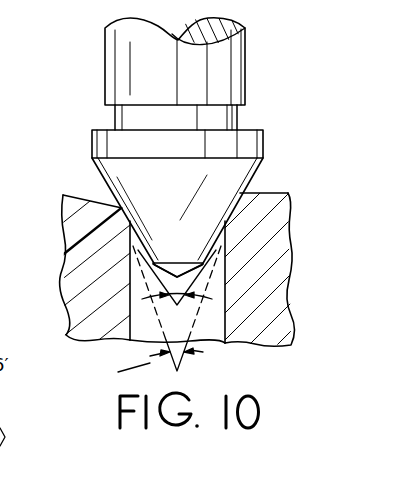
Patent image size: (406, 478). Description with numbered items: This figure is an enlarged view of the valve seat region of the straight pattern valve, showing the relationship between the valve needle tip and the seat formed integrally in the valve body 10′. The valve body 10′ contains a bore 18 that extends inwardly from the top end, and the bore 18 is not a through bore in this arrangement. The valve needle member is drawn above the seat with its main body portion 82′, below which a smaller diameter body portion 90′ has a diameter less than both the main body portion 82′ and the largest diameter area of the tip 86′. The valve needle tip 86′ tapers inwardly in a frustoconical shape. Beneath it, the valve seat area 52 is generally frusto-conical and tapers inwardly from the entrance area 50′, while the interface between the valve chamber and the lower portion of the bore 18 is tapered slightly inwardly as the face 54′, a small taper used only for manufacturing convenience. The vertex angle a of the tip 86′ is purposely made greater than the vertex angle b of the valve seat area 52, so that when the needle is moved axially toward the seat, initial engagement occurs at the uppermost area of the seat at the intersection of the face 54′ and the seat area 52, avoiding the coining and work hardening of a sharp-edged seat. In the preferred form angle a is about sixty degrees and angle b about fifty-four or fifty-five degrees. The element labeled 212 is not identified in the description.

The main body portion 82′ is at (233, 53).
The smaller diameter body portion 90′ is at (237, 118).
The valve needle tip 86′ is at (258, 168).
The entrance area 50′ is at (97, 189).
The face 54′ is at (241, 204).
The valve seat area 52 is at (228, 229).
The valve body 10′ is at (262, 267).
The workpiece side portion 212 is at (63, 257).
The bore 18 is at (207, 320).